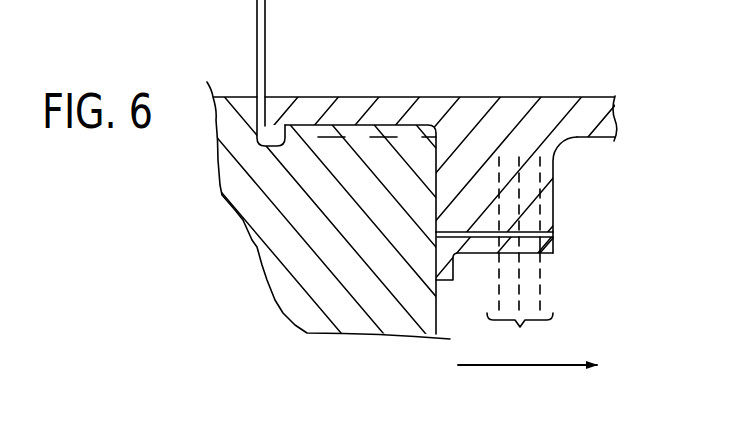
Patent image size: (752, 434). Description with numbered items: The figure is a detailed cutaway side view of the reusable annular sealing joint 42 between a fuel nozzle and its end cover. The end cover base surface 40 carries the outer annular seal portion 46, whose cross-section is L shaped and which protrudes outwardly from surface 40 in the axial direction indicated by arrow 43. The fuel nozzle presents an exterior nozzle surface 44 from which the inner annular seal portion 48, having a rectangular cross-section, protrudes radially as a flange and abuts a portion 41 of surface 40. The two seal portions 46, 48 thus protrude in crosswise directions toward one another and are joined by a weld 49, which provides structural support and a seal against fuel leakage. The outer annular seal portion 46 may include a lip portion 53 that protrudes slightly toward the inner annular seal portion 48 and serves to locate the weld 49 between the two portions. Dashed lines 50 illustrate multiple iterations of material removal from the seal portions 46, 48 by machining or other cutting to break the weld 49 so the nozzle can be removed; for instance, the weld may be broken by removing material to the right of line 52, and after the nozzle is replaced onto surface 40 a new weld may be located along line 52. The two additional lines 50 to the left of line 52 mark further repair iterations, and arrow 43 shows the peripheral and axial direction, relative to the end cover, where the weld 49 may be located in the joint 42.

The end cover base surface 40 is at (437, 305).
The portion of surface 41 is at (436, 188).
The annular sealing joint 42 is at (576, 264).
The axial direction arrow 43 is at (477, 368).
The exterior nozzle surface 44 is at (592, 112).
The outer annular seal portion 46 is at (478, 250).
The inner annular seal portion 48 is at (548, 197).
The weld 49 is at (551, 232).
The lines 50 is at (520, 257).
The line 52 is at (543, 291).
The lip portion 53 is at (553, 248).